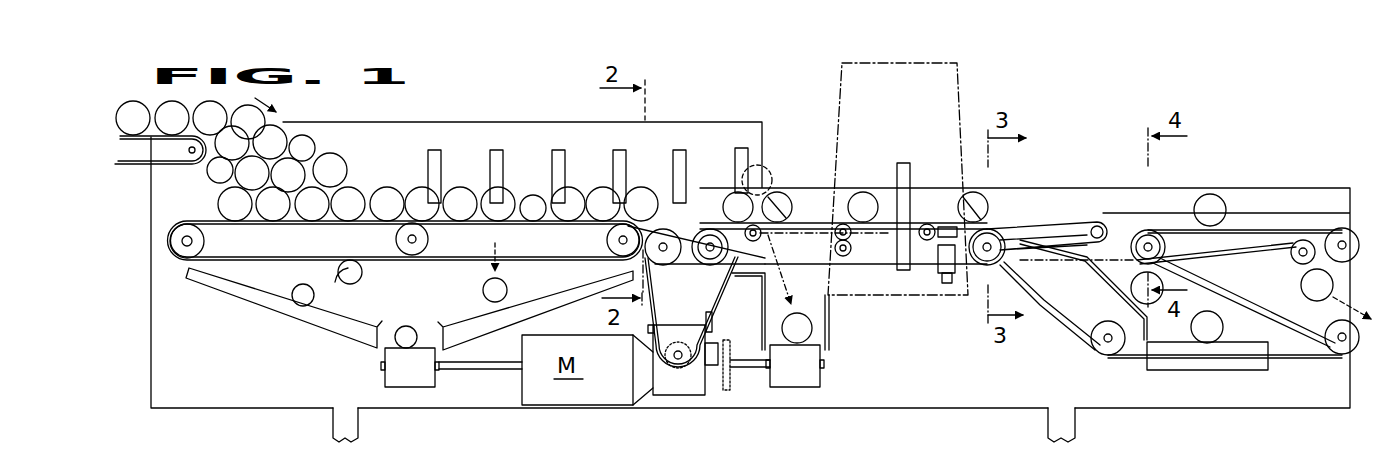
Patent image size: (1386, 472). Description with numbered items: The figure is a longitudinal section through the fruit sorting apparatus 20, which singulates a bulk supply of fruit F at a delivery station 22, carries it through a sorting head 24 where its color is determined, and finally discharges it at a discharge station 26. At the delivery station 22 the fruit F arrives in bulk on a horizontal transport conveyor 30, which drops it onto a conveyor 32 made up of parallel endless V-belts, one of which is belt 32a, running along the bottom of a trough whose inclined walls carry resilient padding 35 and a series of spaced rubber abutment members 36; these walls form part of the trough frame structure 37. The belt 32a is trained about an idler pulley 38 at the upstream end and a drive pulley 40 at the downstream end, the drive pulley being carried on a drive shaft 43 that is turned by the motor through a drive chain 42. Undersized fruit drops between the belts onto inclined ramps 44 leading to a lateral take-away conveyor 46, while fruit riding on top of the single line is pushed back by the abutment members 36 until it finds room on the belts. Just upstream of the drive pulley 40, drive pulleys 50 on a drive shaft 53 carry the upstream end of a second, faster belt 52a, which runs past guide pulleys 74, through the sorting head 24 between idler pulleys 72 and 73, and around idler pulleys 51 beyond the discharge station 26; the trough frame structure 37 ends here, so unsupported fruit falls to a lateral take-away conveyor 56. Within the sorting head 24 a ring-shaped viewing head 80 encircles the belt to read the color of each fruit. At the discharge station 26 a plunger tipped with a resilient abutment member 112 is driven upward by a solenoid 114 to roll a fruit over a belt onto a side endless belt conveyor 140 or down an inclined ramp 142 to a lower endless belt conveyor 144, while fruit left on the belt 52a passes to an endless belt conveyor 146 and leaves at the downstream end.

The fruit sorting apparatus 20 is at (1102, 90).
The delivery station 22 is at (342, 131).
The sorting head 24 is at (964, 82).
The discharge station 26 is at (1049, 186).
The horizontal transport conveyor 30 is at (128, 165).
The conveyor 32 is at (404, 222).
The endless belt 32a is at (473, 223).
The resilient padding 35 is at (405, 128).
The rubber abutment members 36 is at (489, 158).
The trough frame structure 37 is at (149, 202).
The idler pulley 38 is at (200, 243).
The drive pulley 40 is at (700, 267).
The drive chain 42 is at (700, 317).
The drive shaft 43 is at (710, 240).
The inclined ramps 44 is at (440, 325).
The take-away conveyor 46 is at (423, 376).
The drive pulleys 50 is at (663, 240).
The idler pulleys 51 is at (1105, 217).
The endless conveyor belt 52a is at (803, 217).
The drive shaft 53 is at (647, 257).
The take-away conveyor 56 is at (808, 372).
The idler pulleys 72 is at (850, 256).
The idler pulleys 73 is at (915, 226).
The guide pulleys 74 is at (778, 311).
The viewing head 80 is at (905, 161).
The resilient abutment member 112 is at (968, 217).
The solenoid 114 is at (940, 267).
The endless belt conveyor 140 is at (1055, 325).
The inclined ramp 142 is at (1092, 270).
The endless belt conveyor 144 is at (1243, 342).
The endless belt conveyor 146 is at (1277, 227).
The fruit F is at (327, 163).